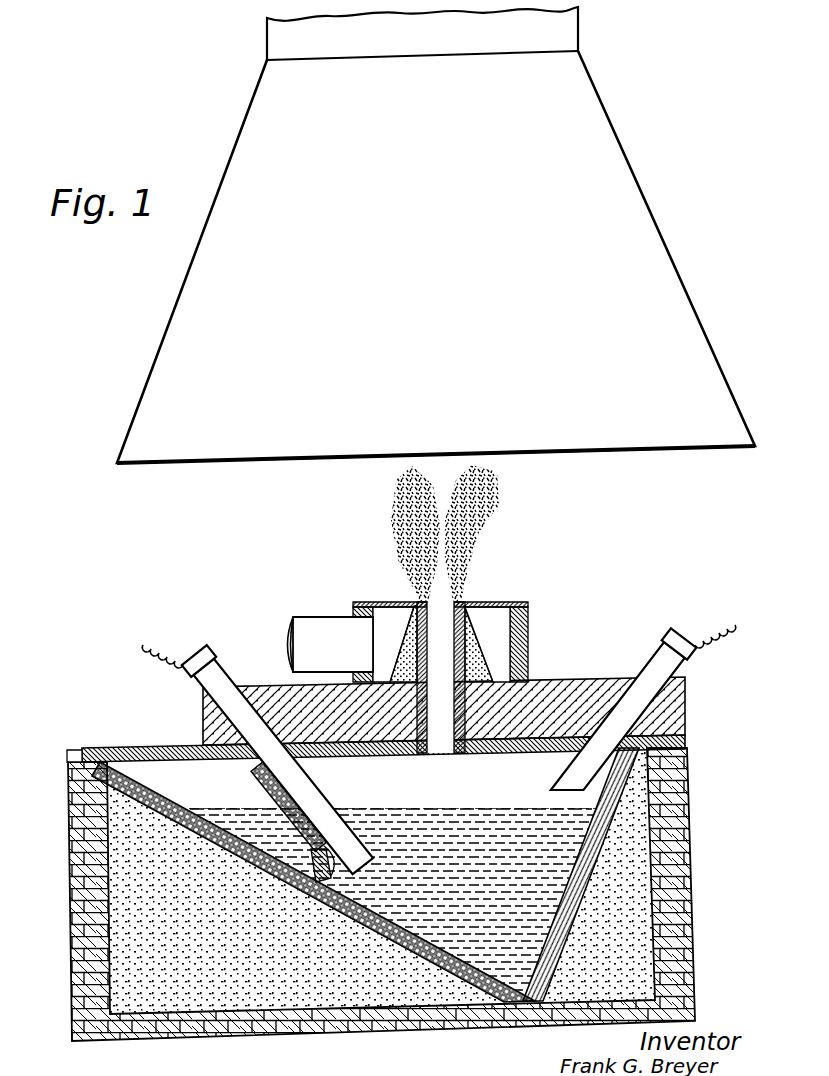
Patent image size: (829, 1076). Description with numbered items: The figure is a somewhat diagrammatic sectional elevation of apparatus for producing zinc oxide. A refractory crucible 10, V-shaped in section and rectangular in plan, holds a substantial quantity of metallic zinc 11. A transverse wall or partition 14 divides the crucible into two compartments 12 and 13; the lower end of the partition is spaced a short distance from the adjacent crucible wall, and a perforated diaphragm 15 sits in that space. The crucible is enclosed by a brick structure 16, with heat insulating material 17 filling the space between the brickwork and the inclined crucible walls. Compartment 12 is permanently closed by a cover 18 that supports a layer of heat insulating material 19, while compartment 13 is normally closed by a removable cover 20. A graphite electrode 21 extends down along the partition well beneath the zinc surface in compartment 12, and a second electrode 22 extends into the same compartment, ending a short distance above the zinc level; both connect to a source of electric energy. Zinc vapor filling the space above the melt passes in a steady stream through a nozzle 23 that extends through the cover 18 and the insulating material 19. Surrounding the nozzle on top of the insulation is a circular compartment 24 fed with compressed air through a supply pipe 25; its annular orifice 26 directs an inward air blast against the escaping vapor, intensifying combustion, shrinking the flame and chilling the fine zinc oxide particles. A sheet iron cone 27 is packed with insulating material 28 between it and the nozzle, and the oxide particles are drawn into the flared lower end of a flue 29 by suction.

The crucible 10 is at (397, 927).
The metallic zinc 11 is at (422, 834).
The compartment 12 is at (408, 783).
The compartment 13 is at (219, 784).
The transverse wall or partition 14 is at (274, 789).
The perforated diaphragm 15 is at (323, 878).
The brick structure 16 is at (692, 834).
The heat insulating material 17 is at (622, 908).
The cover 18 is at (521, 756).
The heat insulating material 19 is at (563, 681).
The removable cover 20 is at (143, 748).
The electrode 21 is at (213, 671).
The electrode 22 is at (666, 658).
The nozzle 23 is at (430, 702).
The circular compartment 24 is at (502, 622).
The supply pipe 25 is at (331, 644).
The annular orifice 26 is at (476, 603).
The cone 27 is at (529, 656).
The refractory lining 28 is at (493, 660).
The flue 29 is at (436, 235).